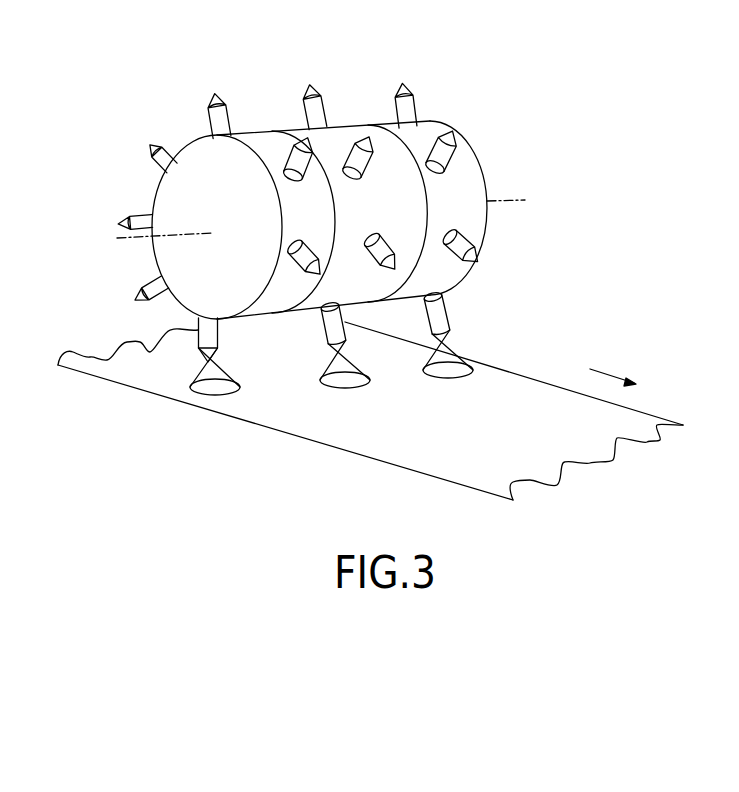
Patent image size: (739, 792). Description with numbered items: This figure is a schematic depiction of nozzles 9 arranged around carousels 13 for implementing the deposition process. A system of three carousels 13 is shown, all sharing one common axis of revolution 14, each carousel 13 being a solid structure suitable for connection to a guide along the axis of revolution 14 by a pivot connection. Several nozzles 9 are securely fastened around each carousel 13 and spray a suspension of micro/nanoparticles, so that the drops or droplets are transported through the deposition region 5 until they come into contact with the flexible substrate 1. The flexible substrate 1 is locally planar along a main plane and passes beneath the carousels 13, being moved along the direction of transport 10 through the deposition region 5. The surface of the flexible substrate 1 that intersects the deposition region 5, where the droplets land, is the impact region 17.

The flexible substrate 1 is at (397, 450).
The deposition region 5 is at (455, 357).
The nozzle 9 is at (320, 110).
The direction of transport 10 is at (612, 377).
The carousel 13 is at (288, 137).
The axis of revolution 14 is at (518, 200).
The impact region 17 is at (213, 392).